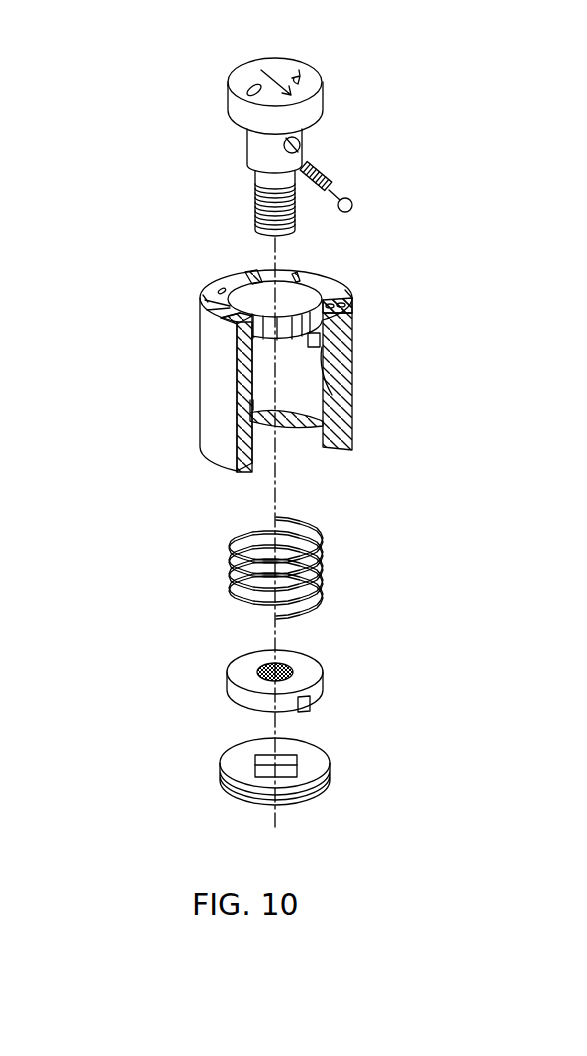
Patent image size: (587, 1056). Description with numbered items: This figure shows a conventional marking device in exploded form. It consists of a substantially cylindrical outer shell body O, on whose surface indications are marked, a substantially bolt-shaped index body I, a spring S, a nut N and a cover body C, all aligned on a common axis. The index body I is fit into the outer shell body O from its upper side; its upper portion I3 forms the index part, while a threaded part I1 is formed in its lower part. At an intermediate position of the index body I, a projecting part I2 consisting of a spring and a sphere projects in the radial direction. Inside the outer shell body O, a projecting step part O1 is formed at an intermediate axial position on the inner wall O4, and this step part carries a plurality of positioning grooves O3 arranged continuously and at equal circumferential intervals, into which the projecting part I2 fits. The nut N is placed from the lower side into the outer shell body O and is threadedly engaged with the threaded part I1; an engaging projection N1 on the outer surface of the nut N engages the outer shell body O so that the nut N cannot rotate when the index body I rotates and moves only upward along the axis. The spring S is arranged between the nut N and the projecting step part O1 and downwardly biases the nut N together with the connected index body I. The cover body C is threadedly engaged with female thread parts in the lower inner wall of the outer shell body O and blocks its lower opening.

The index body I is at (323, 73).
The threaded part I1 is at (254, 206).
The projecting part I2 is at (353, 205).
The head of inner member I3 is at (227, 85).
The outer shell body O is at (353, 341).
The projecting step part O1 is at (340, 414).
The positioning grooves O3 is at (352, 293).
The outer wall of outer member O4 is at (205, 300).
The spring S is at (323, 562).
The nut N is at (313, 660).
The engaging projection N1 is at (310, 703).
The cover body C is at (320, 762).